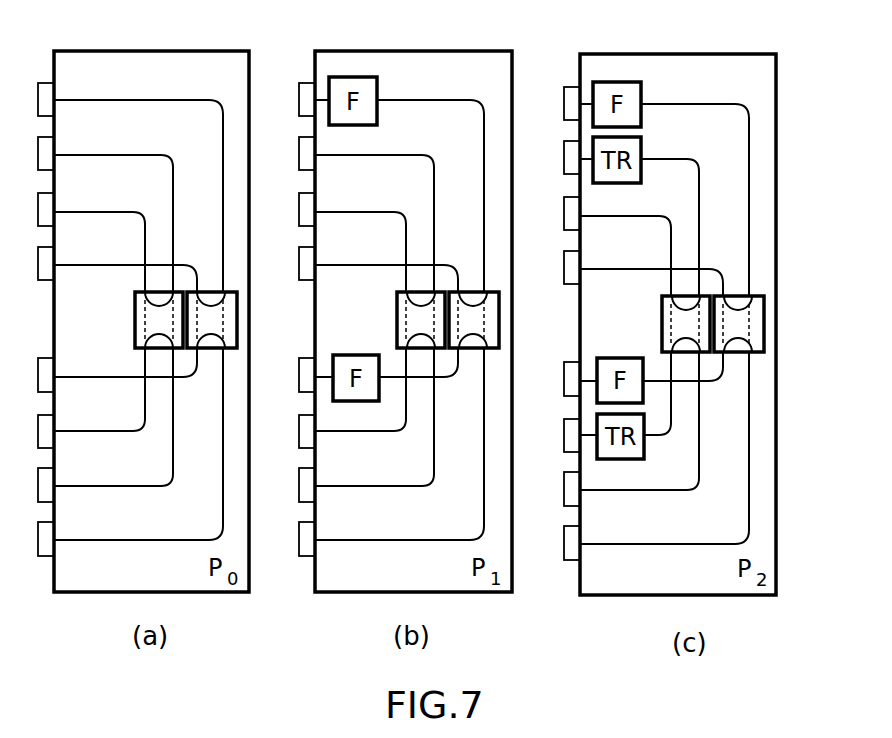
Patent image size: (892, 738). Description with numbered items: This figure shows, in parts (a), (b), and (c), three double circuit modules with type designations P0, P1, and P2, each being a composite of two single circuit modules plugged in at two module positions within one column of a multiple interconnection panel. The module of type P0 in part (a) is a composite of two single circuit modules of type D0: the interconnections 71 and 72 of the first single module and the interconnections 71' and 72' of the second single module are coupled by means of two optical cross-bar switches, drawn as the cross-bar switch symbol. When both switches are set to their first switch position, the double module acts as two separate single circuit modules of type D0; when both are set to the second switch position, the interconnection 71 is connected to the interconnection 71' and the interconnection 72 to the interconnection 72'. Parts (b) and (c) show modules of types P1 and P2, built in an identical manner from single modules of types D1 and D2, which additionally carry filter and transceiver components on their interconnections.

The interconnection 71 is at (138, 180).
The interconnection 71' is at (140, 444).
The interconnection 72 is at (133, 207).
The interconnection 72' is at (113, 417).